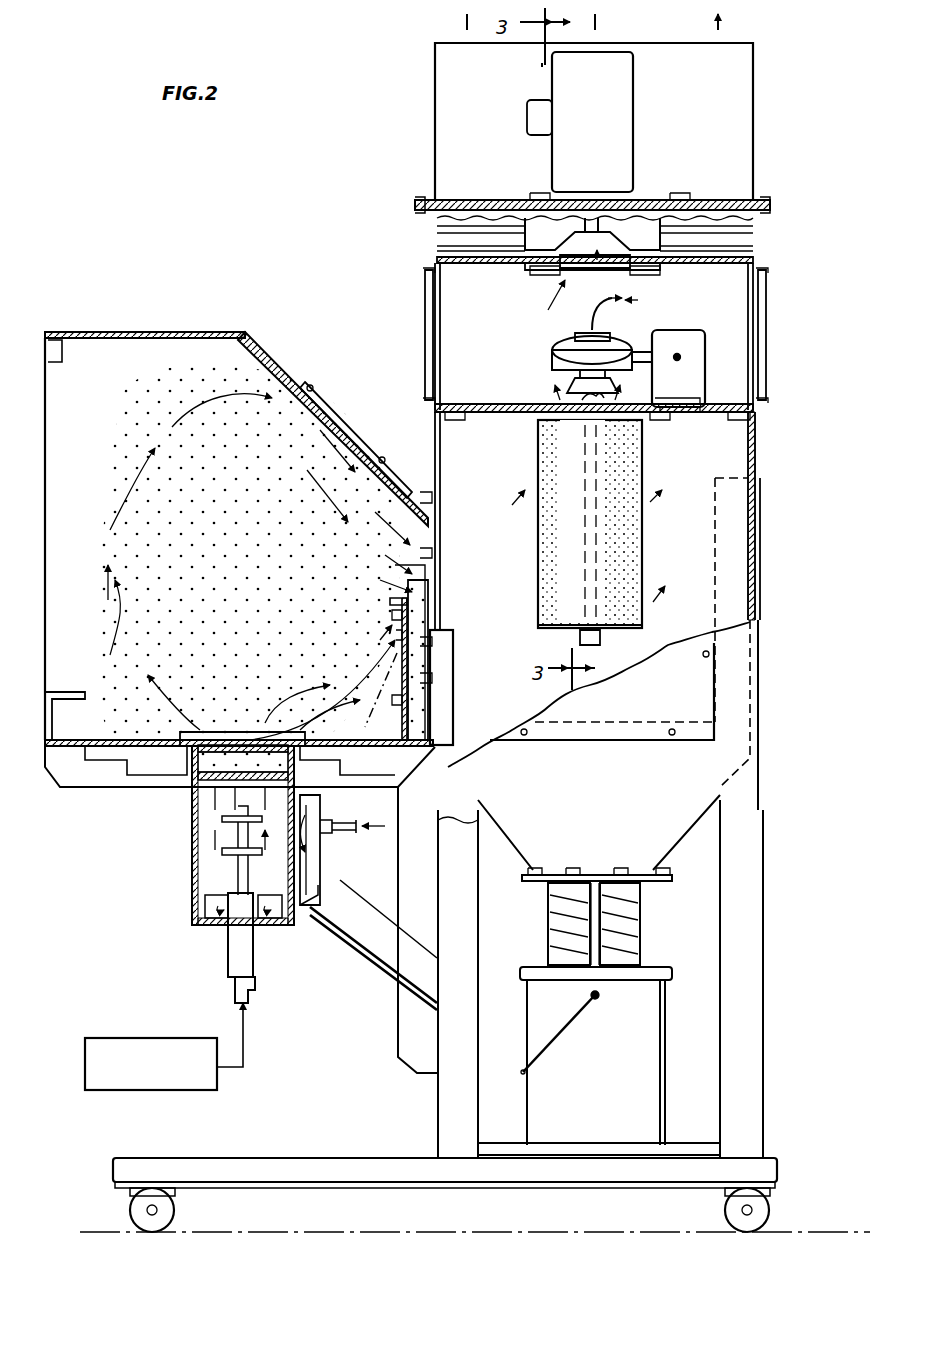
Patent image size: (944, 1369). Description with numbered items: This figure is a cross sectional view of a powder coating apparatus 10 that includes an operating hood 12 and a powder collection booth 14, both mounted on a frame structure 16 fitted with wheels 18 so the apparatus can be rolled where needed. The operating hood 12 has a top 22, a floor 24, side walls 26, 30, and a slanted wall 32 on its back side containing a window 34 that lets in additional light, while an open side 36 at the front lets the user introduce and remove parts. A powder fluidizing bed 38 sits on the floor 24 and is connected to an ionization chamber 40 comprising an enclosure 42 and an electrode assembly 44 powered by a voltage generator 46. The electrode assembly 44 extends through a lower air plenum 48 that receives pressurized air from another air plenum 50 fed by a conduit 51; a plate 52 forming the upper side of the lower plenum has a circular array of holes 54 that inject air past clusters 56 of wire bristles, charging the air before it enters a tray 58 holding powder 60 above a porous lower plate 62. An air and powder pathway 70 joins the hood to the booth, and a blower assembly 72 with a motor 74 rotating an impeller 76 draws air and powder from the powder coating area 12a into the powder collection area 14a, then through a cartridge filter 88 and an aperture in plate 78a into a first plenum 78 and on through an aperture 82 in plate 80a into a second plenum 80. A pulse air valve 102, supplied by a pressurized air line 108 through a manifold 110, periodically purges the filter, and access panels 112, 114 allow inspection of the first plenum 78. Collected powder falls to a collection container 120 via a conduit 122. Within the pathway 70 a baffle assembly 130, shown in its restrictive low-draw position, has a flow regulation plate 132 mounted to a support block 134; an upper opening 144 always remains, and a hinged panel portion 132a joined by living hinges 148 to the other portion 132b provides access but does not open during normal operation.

The powder coating apparatus 10 is at (272, 208).
The operating hood 12 is at (182, 322).
The powder coating area 12a is at (180, 518).
The powder collection booth 14 is at (762, 190).
The powder collection area 14a is at (692, 545).
The frame structure 16 is at (393, 1047).
The wheels 18 is at (175, 1212).
The top 22 is at (105, 325).
The floor 24 is at (105, 735).
The side wall 26 is at (200, 345).
The side wall 30 is at (420, 515).
The slanted wall 32 is at (555, 430).
The window 34 is at (328, 432).
The open side 36 is at (72, 405).
The powder fluidizing bed 38 is at (238, 720).
The ionization chamber 40 is at (170, 860).
The enclosure 42 is at (190, 835).
The electrode assembly 44 is at (230, 978).
The voltage generator 46 is at (150, 1038).
The lower air plenum 48 is at (265, 925).
The air plenum 50 is at (320, 850).
The conduit 51 is at (350, 818).
The plate 52 is at (205, 897).
The holes 54 is at (205, 883).
The clusters of wire bristles 56 is at (298, 878).
The tray 58 is at (200, 730).
The powder 60 is at (220, 740).
The lower plate 62 is at (190, 798).
The air and powder pathway 70 is at (452, 653).
The blower assembly 72 is at (648, 182).
The motor 74 is at (599, 130).
The impeller 76 is at (542, 228).
The first plenum 78 is at (511, 343).
The plate 78a is at (478, 406).
The second plenum 80 is at (452, 238).
The plate 80a is at (632, 270).
The aperture 82 is at (565, 270).
The cartridge filter 88 is at (645, 470).
The pulse air valve 102 is at (580, 360).
The pressurized air line 108 is at (680, 358).
The manifold 110 is at (680, 330).
The access panel 112 is at (424, 320).
The access panel 114 is at (788, 290).
The collection container 120 is at (602, 1086).
The conduit 122 is at (640, 918).
The baffle assembly 130 is at (385, 592).
The flow regulation plate 132 is at (393, 600).
The door or panel portion 132a is at (395, 688).
The plate portion 132b is at (405, 620).
The block or support member 134 is at (432, 572).
The upper opening 144 is at (412, 568).
The living hinges 148 is at (380, 640).